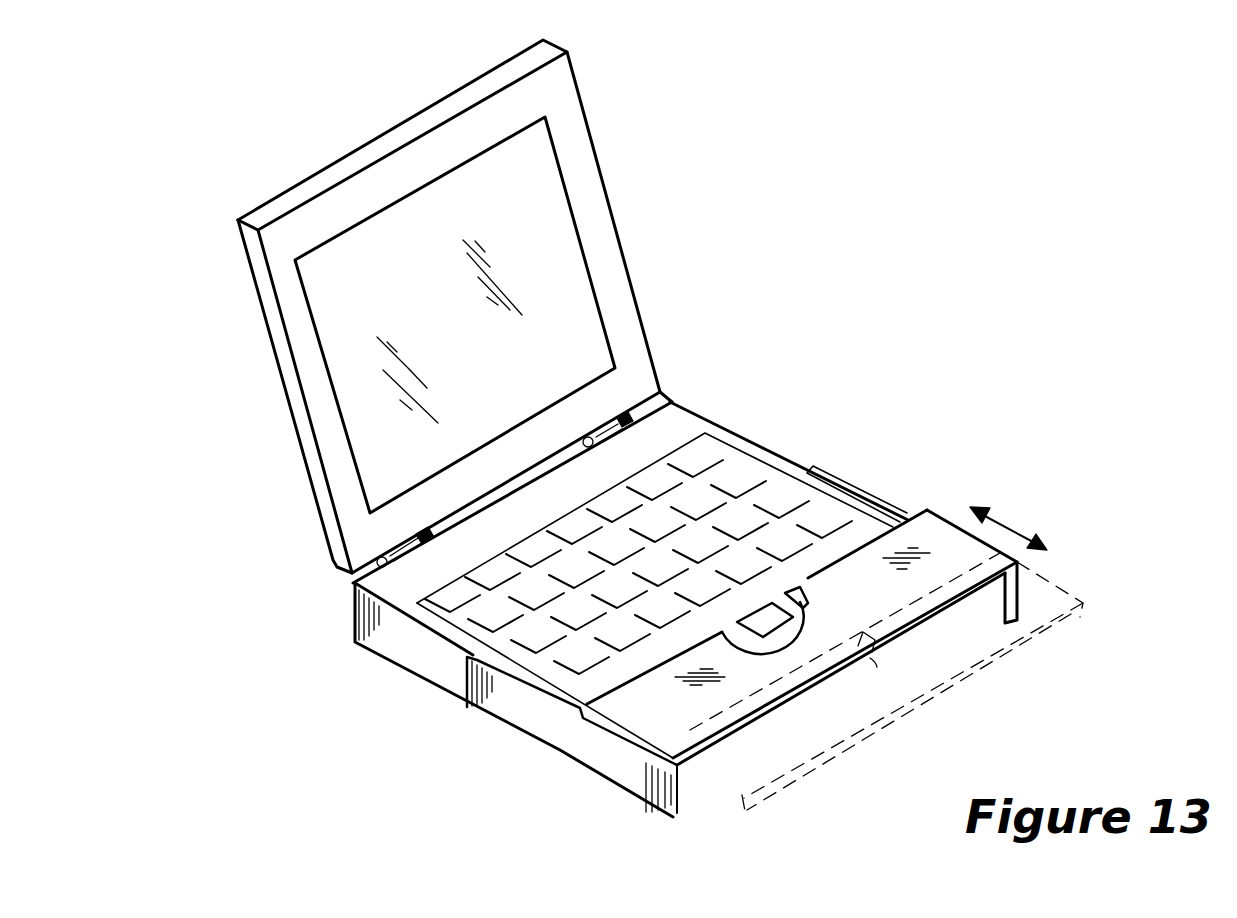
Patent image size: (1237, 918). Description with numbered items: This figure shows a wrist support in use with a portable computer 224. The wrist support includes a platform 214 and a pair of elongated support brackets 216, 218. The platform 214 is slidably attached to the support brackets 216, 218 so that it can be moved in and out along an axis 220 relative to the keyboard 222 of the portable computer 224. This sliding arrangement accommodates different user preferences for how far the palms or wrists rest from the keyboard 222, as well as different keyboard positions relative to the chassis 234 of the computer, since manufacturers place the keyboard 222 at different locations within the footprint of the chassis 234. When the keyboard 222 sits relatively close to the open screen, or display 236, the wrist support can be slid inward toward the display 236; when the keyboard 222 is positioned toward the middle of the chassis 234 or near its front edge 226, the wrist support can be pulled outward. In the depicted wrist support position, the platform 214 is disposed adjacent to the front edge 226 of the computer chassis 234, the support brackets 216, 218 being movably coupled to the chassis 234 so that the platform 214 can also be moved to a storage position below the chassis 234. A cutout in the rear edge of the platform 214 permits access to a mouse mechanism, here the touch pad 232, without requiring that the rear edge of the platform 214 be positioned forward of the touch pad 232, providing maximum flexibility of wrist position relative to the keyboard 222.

The platform 214 is at (633, 722).
The support bracket 216 is at (507, 712).
The support bracket 218 is at (837, 473).
The axis 220 is at (1007, 522).
The keyboard 222 is at (675, 440).
The portable computer 224 is at (387, 638).
The front edge 226 is at (712, 765).
The touch pad 232 is at (803, 600).
The chassis 234 is at (753, 440).
The display 236 is at (567, 270).